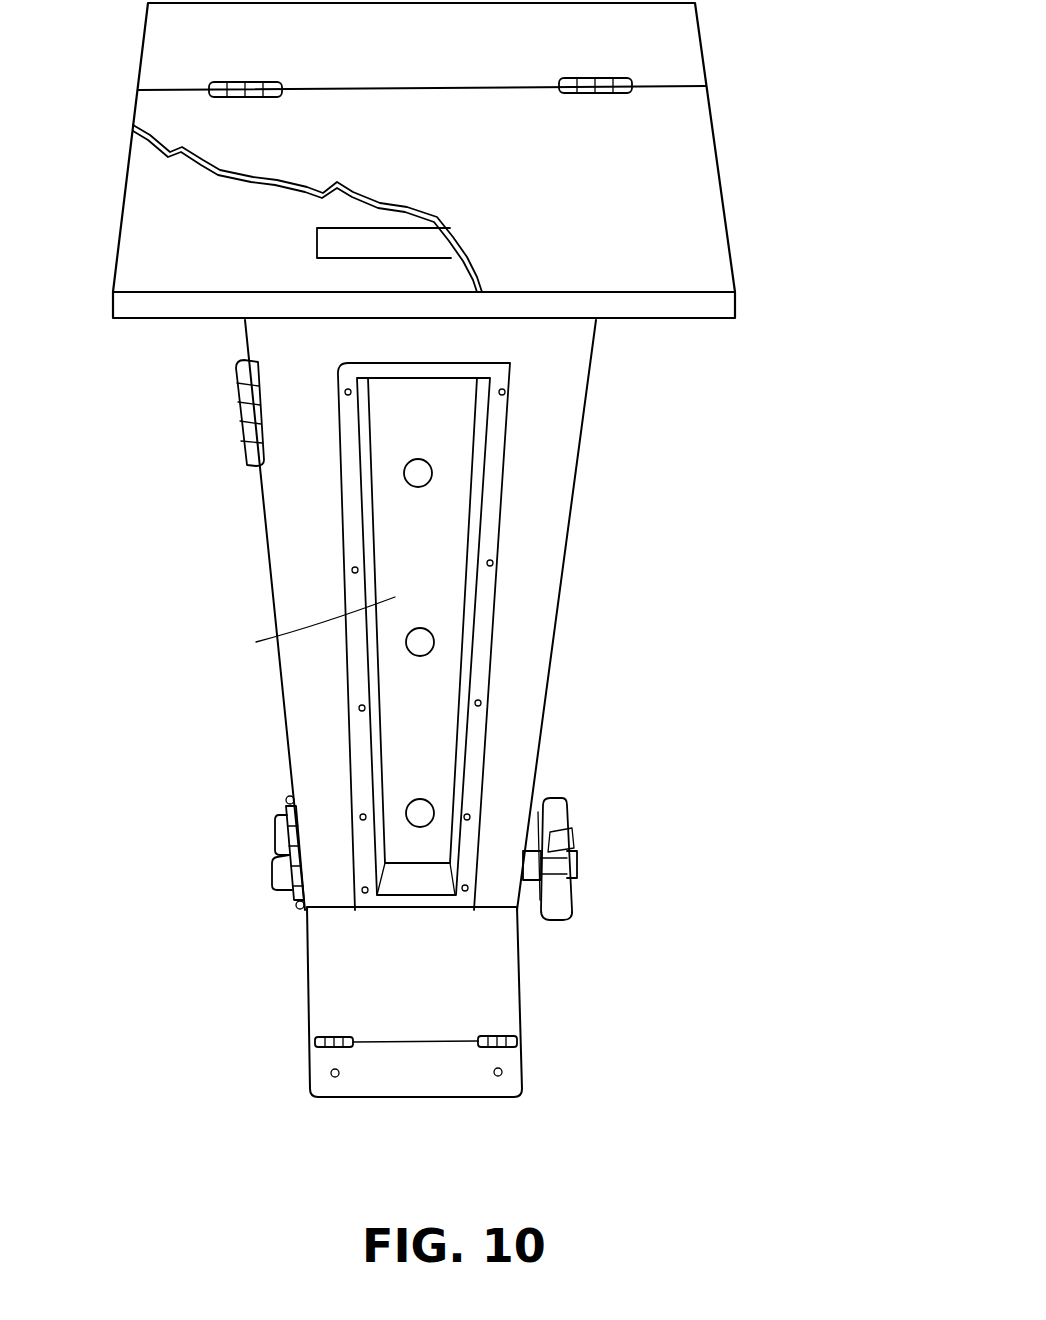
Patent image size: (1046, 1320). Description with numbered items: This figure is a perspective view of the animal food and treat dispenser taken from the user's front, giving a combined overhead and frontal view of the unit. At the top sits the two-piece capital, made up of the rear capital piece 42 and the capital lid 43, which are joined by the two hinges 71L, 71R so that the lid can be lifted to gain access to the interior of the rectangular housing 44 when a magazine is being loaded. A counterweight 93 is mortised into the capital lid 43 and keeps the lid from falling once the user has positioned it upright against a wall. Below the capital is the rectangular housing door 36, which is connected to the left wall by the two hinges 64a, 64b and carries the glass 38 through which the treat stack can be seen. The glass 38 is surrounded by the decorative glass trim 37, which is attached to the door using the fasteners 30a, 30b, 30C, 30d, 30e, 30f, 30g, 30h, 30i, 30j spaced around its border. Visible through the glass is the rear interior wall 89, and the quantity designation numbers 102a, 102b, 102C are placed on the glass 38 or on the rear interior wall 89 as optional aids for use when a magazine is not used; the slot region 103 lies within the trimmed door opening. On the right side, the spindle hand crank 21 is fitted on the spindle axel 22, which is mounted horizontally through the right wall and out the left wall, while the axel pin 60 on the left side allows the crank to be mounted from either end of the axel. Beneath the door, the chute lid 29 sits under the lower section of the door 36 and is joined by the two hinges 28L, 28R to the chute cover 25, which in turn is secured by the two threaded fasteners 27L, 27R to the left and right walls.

The capital 42 is at (700, 45).
The capital lid 43 is at (720, 178).
The hinge 71L is at (234, 81).
The hinge 71R is at (583, 77).
The counterweight 93 is at (316, 240).
The rectangular housing 44 is at (578, 462).
The rectangular housing door 36 is at (540, 748).
The glass 38 is at (390, 500).
The glass trim 37 is at (510, 363).
The slot 103 is at (295, 630).
The rear interior wall 89 is at (455, 438).
The quantity designation number 102C is at (432, 478).
The quantity designation number 102b is at (434, 640).
The quantity designation number 102a is at (408, 806).
The fastener 30a is at (365, 893).
The fastener 30b is at (466, 891).
The fastener 30C is at (360, 816).
The fastener 30d is at (470, 815).
The fastener 30e is at (359, 707).
The fastener 30f is at (481, 701).
The fastener 30g is at (352, 571).
The fastener 30h is at (493, 565).
The fastener 30i is at (346, 395).
The fastener 30j is at (505, 392).
The hinge 64b is at (236, 386).
The hinge 64a is at (296, 905).
The axel pin 60 is at (275, 843).
The spindle hand crank 21 is at (568, 812).
The spindle axel 22 is at (578, 866).
The chute lid 29 is at (494, 1011).
The chute cover 25 is at (307, 1072).
The hinge 28L is at (333, 1037).
The hinge 28R is at (510, 1048).
The threaded fastener 27L is at (335, 1078).
The threaded fastener 27R is at (500, 1077).